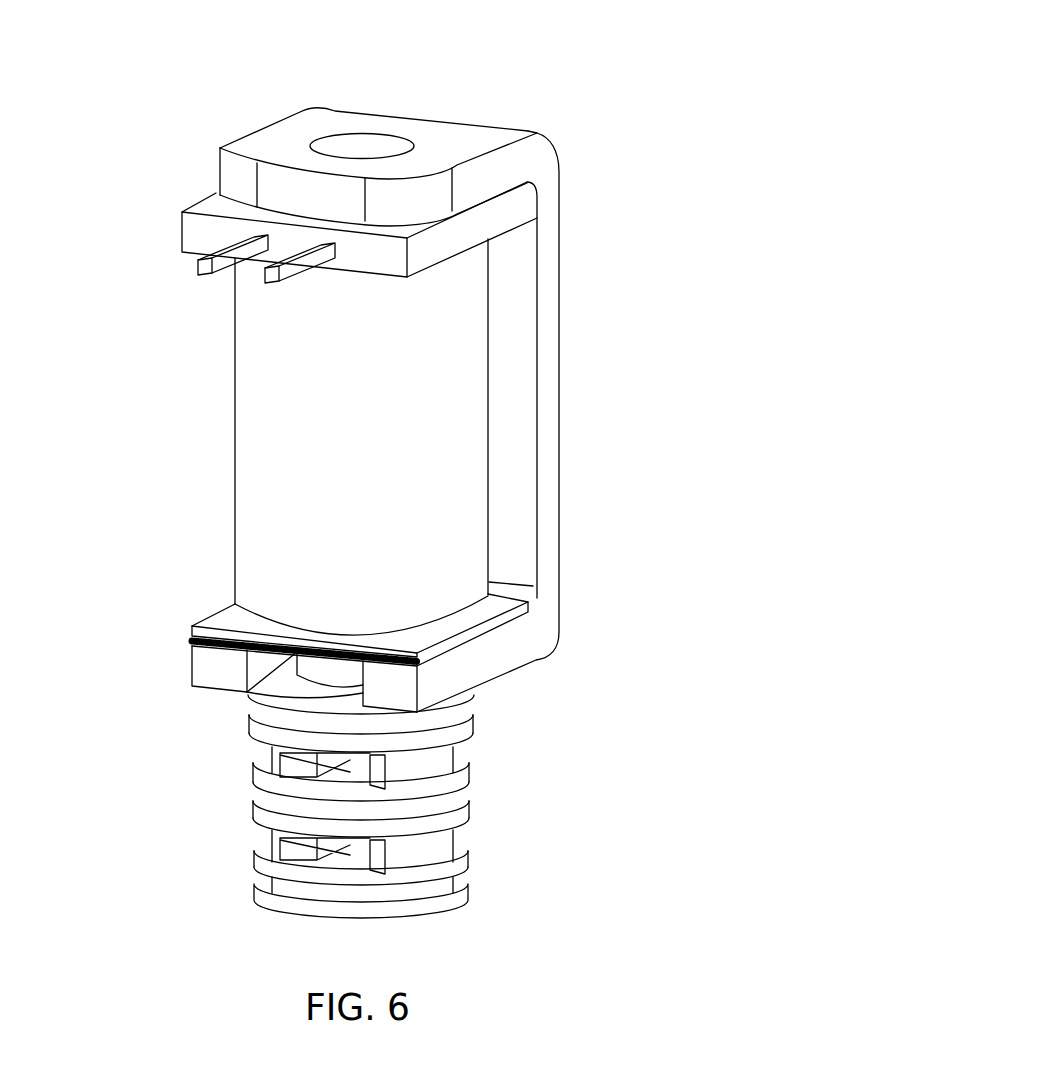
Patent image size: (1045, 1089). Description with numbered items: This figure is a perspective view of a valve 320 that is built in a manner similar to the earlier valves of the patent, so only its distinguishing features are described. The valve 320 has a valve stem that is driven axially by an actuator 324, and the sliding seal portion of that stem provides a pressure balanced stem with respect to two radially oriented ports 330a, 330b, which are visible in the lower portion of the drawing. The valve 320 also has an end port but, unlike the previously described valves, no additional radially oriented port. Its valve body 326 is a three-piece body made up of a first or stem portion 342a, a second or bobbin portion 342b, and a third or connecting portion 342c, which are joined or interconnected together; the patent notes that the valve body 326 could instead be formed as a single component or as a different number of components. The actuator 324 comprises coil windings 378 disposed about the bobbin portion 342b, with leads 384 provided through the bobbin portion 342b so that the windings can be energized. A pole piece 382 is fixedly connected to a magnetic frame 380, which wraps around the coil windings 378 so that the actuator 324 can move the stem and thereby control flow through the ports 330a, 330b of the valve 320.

The valve 320 is at (664, 73).
The actuator 324 is at (214, 433).
The valve body 326 is at (266, 235).
The radially oriented port 330a is at (272, 836).
The radially oriented port 330b is at (272, 751).
The stem portion 342a is at (455, 837).
The bobbin portion 342b is at (507, 233).
The connecting portion 342c is at (484, 682).
The coil windings 378 is at (260, 527).
The magnetic frame 380 is at (512, 423).
The pole piece 382 is at (363, 145).
The leads 384 is at (201, 277).